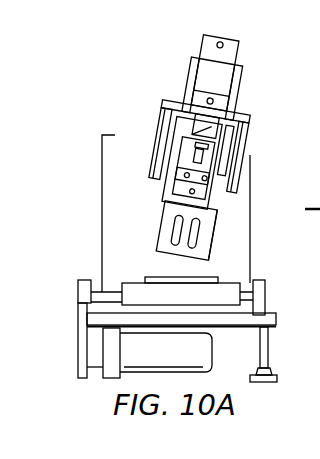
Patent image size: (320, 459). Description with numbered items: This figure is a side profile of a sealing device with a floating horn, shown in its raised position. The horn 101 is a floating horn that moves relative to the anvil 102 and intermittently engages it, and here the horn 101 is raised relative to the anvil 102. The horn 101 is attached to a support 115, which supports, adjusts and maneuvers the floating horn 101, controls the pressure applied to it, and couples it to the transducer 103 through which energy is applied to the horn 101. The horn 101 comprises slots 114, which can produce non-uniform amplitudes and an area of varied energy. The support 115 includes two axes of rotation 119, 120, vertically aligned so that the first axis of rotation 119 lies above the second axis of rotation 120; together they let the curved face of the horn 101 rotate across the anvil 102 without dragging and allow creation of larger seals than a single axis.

The horn 101 is at (160, 220).
The anvil 102 is at (152, 277).
The transducer 103 is at (202, 56).
The slots 114 is at (216, 238).
The support 115 is at (158, 125).
The first axis of rotation 119 is at (252, 118).
The second axis of rotation 120 is at (248, 144).